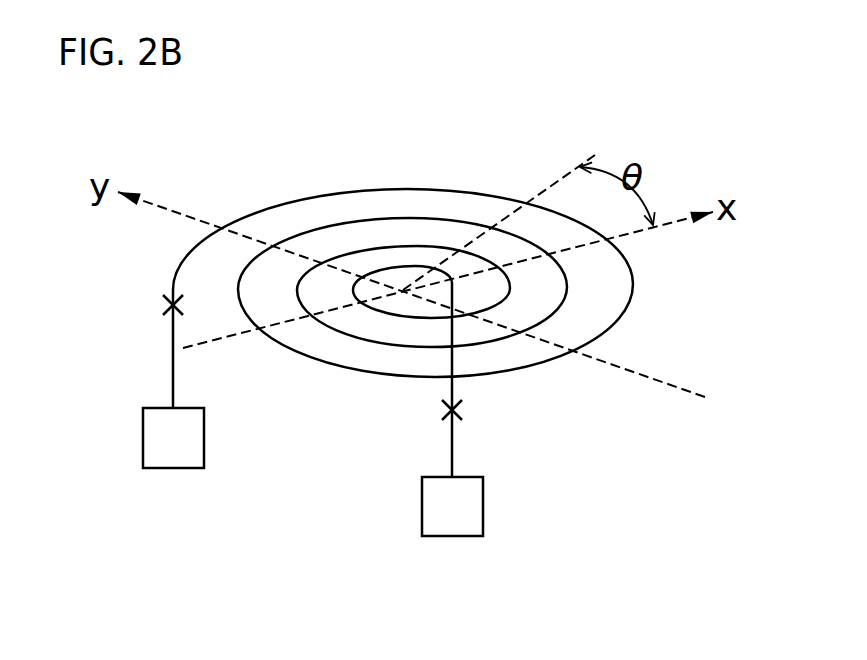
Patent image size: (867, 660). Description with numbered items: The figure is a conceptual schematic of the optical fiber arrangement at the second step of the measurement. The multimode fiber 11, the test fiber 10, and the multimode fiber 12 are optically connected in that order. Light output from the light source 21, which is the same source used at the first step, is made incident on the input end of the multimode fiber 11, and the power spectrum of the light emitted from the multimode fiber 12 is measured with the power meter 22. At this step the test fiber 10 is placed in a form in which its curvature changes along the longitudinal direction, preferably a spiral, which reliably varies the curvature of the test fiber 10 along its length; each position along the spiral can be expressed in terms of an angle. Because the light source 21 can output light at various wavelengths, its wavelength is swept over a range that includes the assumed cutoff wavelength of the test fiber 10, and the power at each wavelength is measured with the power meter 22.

The test fiber 10 is at (403, 188).
The multimode fiber 11 is at (452, 432).
The multimode fiber 12 is at (173, 368).
The light source 21 is at (483, 508).
The power meter 22 is at (143, 436).